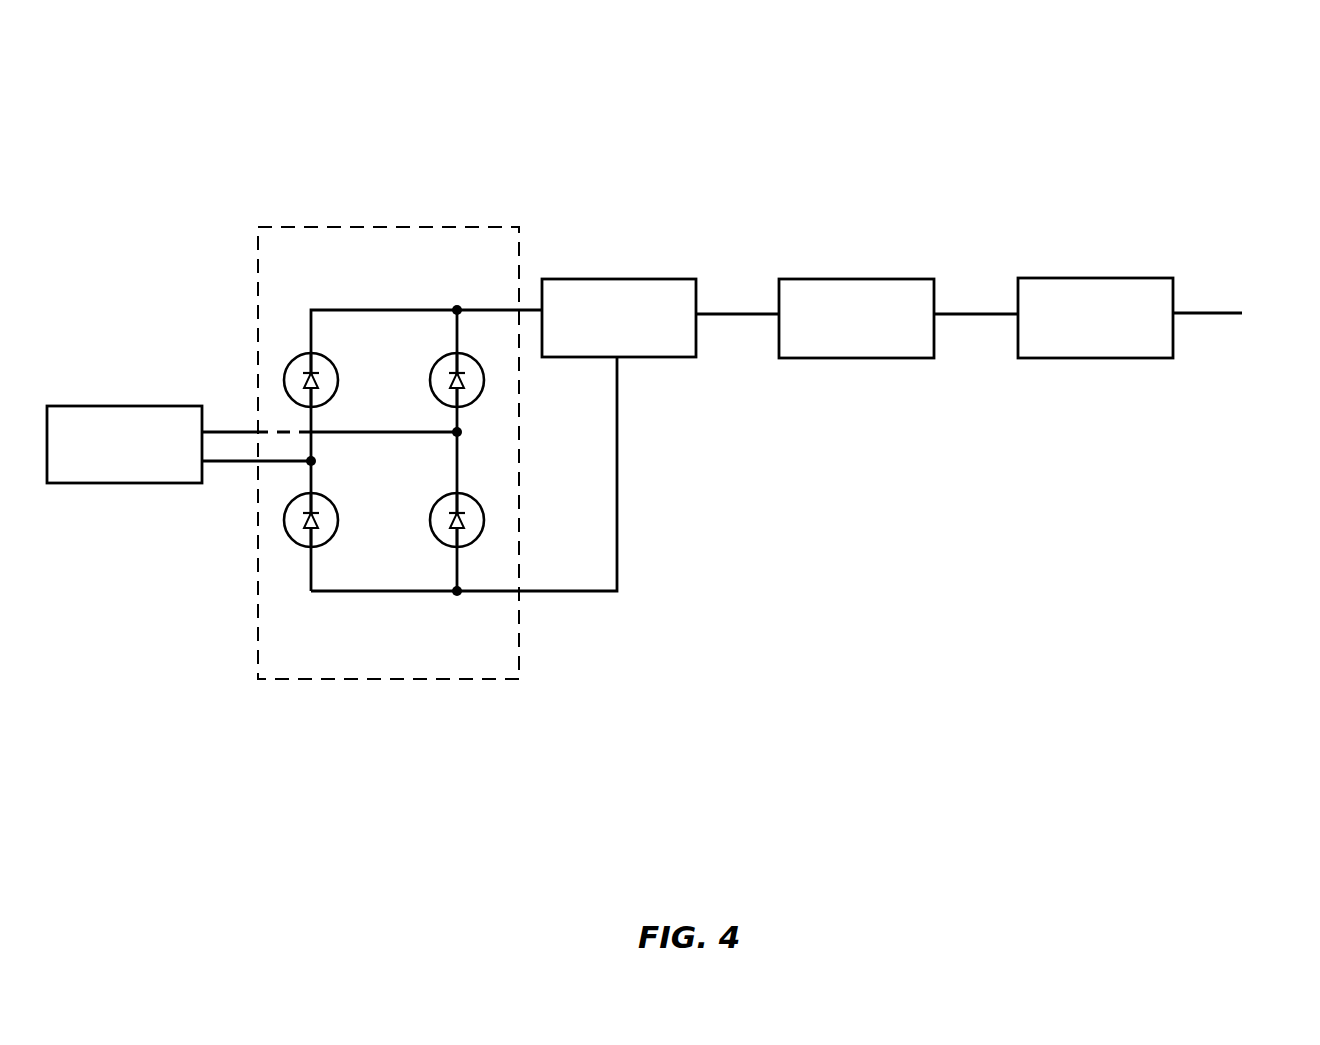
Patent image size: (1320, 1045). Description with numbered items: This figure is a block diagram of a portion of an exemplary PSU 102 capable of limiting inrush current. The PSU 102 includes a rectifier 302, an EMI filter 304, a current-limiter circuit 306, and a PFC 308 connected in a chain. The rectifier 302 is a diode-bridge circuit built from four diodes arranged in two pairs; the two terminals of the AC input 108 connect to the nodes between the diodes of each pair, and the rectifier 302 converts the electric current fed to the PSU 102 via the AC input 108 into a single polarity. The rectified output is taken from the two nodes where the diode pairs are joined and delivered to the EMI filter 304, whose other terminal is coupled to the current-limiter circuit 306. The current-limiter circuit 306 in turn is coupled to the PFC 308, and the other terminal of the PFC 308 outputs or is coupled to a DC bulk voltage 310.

The PSU 102 is at (134, 128).
The AC input 108 is at (108, 466).
The rectifier 302 is at (388, 227).
The EMI filter 304 is at (603, 338).
The current-limiter circuit 306 is at (840, 350).
The PFC 308 is at (1079, 336).
The DC bulk voltage 310 is at (1246, 325).